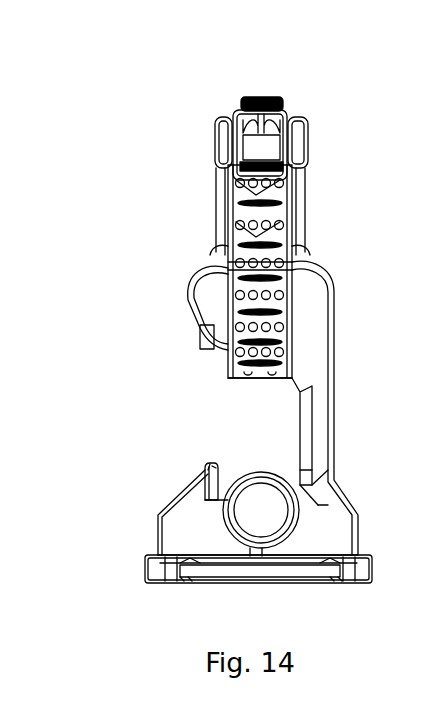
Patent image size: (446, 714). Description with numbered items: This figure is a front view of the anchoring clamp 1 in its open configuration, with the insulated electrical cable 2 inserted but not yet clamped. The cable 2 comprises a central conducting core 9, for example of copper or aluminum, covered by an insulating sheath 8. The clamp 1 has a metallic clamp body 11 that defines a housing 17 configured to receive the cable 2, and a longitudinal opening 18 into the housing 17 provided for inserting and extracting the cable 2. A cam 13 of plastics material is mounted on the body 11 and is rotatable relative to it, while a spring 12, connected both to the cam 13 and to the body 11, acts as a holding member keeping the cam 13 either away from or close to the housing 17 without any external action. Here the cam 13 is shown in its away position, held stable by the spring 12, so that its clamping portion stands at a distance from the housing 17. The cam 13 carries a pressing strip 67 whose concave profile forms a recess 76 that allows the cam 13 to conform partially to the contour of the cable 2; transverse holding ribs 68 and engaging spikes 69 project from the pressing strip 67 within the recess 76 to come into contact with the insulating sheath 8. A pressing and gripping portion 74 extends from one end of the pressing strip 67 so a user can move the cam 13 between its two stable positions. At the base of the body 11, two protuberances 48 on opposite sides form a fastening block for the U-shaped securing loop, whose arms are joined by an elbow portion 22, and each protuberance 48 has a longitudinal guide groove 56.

The anchoring clamp 1 is at (405, 160).
The insulated electrical cable 2 is at (250, 474).
The insulating sheath 8 is at (228, 498).
The central conducting core 9 is at (240, 520).
The clamp body 11 is at (338, 434).
The spring 12 is at (298, 118).
The cam 13 is at (228, 250).
The housing 17 is at (250, 548).
The longitudinal opening 18 is at (232, 467).
The elbow portion 22 is at (286, 572).
The protuberances 48 is at (363, 542).
The longitudinal guide groove 56 is at (186, 582).
The pressing strip 67 is at (292, 262).
The transverse holding ribs 68 is at (262, 206).
The engaging spikes 69 is at (275, 184).
The pressing and gripping portion 74 is at (256, 98).
The recess 76 is at (258, 377).